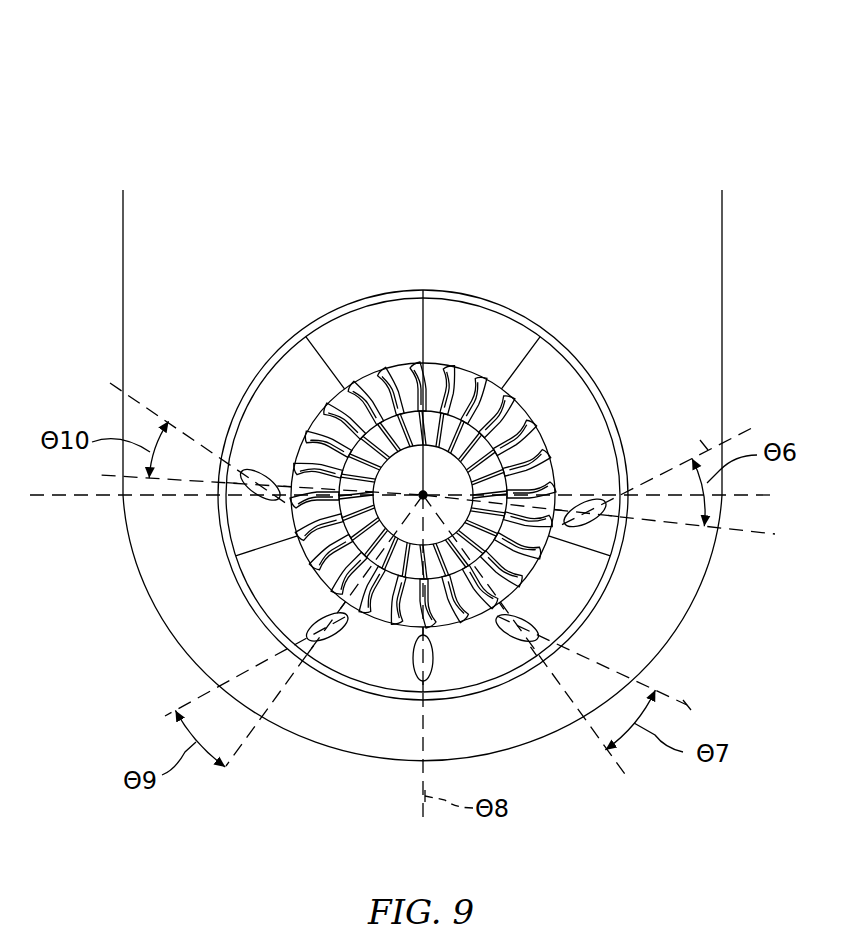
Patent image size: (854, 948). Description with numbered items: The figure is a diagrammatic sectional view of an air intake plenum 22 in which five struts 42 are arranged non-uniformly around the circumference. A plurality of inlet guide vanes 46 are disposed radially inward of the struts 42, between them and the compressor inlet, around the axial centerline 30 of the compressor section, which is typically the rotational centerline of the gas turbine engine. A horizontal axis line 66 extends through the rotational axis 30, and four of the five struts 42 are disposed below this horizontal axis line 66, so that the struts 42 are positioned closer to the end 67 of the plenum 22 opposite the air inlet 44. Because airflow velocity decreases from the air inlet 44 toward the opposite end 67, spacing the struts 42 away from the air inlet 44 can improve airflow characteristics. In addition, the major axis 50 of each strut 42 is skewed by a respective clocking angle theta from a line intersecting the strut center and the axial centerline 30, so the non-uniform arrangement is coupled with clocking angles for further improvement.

The air intake plenum 22 is at (700, 92).
The air inlet 44 is at (592, 185).
The axial centerline 30 is at (470, 380).
The inlet guide vanes 46 is at (527, 413).
The struts 42 is at (262, 467).
The major axis 50 is at (700, 445).
The horizontal axis line 66 is at (38, 500).
The end of the plenum 67 is at (368, 773).